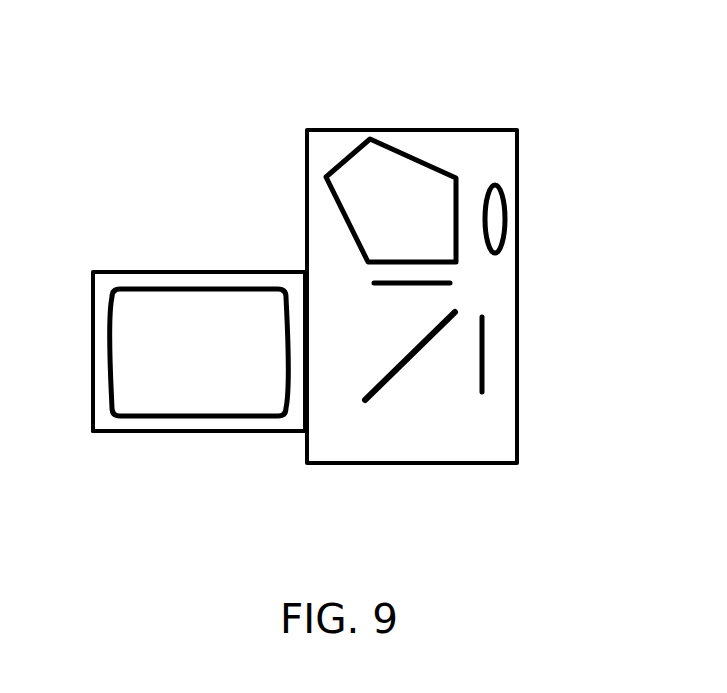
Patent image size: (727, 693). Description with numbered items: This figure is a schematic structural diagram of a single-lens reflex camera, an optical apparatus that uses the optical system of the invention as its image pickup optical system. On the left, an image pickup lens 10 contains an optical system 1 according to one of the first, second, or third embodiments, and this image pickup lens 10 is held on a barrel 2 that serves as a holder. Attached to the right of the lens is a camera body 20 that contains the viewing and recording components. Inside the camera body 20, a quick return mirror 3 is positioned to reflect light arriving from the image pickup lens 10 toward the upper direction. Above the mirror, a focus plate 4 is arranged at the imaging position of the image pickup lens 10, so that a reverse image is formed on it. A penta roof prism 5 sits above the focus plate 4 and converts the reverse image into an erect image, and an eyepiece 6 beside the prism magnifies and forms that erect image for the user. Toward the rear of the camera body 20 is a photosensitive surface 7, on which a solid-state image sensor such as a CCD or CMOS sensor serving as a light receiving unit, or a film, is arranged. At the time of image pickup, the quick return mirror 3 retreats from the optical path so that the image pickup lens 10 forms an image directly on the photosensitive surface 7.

The image pickup lens 10 is at (230, 260).
The optical system 1 is at (185, 285).
The barrel 2 is at (203, 432).
The camera body 20 is at (390, 105).
The penta roof prism 5 is at (350, 153).
The eyepiece 6 is at (503, 197).
The photosensitive surface 7 is at (485, 353).
The focus plate 4 is at (388, 286).
The quick return mirror 3 is at (388, 378).